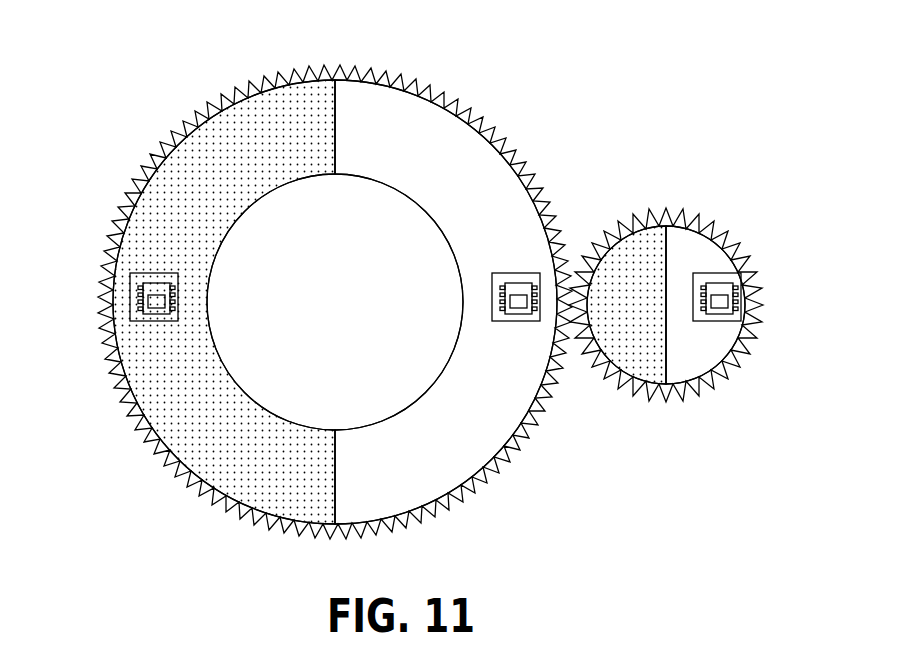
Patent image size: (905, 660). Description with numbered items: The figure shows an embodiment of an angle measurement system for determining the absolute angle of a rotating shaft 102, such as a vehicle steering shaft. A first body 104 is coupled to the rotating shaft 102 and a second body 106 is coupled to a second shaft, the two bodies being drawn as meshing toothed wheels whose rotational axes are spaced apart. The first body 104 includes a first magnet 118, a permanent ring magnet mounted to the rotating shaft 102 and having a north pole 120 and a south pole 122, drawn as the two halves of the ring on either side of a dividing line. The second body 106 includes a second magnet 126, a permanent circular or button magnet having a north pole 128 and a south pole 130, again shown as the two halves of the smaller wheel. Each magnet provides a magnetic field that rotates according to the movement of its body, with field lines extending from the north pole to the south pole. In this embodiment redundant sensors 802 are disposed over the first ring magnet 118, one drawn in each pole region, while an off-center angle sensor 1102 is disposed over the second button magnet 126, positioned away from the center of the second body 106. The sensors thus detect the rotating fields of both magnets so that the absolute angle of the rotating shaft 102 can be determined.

The rotating shaft 102 is at (353, 318).
The first body 104 is at (141, 127).
The second body 106 is at (727, 205).
The first magnet 118 is at (329, 99).
The north pole 120 is at (205, 396).
The south pole 122 is at (509, 398).
The second magnet 126 is at (658, 241).
The north pole 128 is at (653, 270).
The south pole 130 is at (713, 270).
The redundant sensor 802 is at (157, 320).
The off-center angle sensor 1102 is at (724, 283).